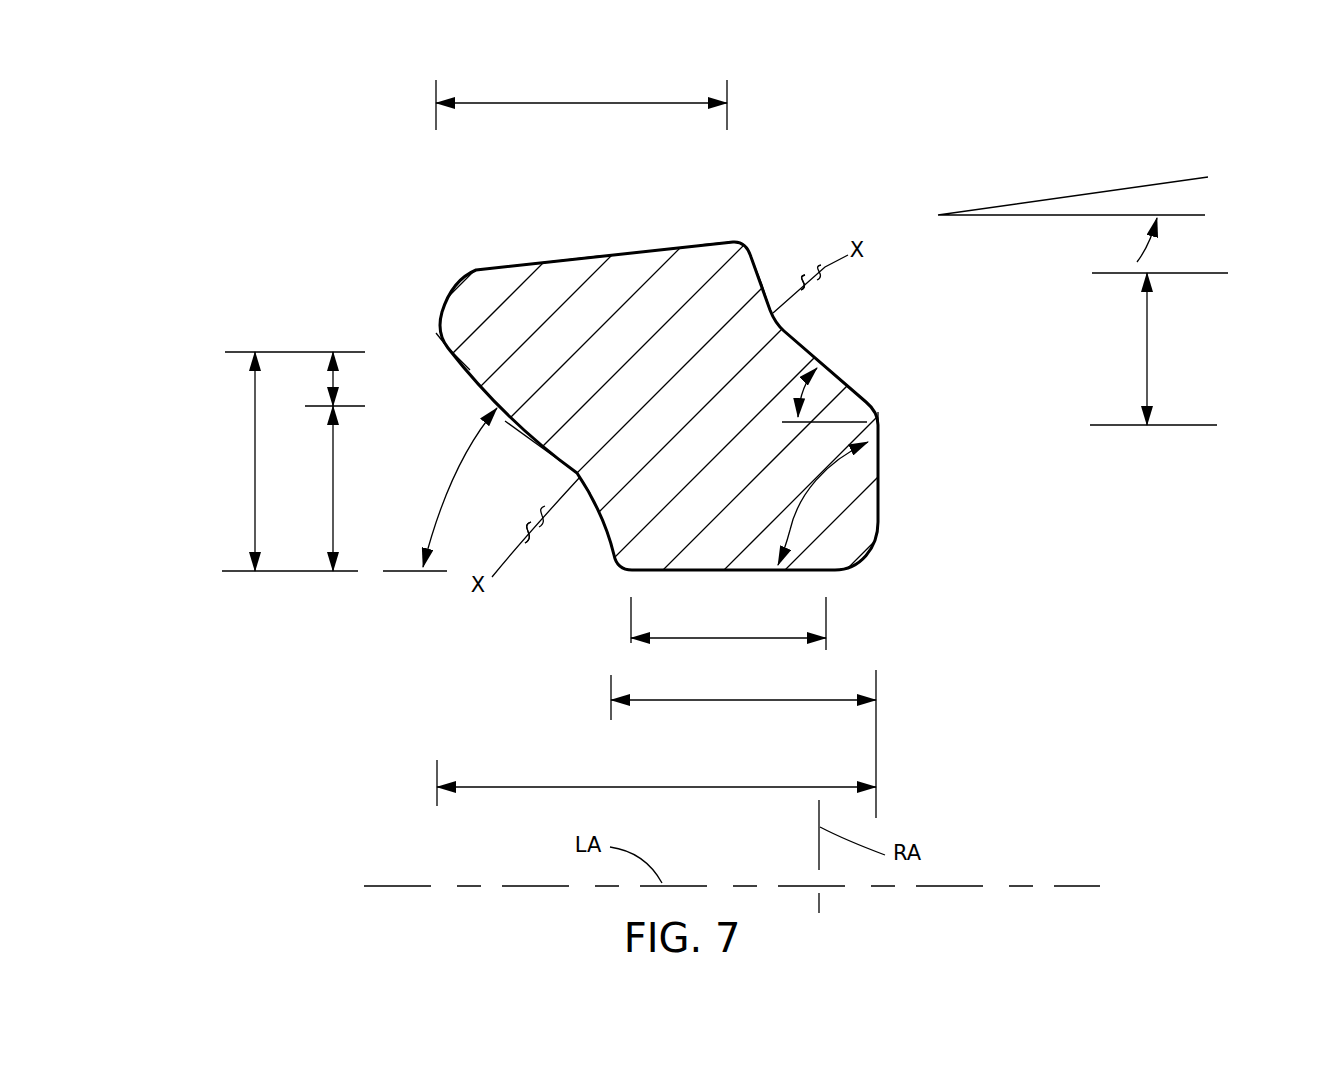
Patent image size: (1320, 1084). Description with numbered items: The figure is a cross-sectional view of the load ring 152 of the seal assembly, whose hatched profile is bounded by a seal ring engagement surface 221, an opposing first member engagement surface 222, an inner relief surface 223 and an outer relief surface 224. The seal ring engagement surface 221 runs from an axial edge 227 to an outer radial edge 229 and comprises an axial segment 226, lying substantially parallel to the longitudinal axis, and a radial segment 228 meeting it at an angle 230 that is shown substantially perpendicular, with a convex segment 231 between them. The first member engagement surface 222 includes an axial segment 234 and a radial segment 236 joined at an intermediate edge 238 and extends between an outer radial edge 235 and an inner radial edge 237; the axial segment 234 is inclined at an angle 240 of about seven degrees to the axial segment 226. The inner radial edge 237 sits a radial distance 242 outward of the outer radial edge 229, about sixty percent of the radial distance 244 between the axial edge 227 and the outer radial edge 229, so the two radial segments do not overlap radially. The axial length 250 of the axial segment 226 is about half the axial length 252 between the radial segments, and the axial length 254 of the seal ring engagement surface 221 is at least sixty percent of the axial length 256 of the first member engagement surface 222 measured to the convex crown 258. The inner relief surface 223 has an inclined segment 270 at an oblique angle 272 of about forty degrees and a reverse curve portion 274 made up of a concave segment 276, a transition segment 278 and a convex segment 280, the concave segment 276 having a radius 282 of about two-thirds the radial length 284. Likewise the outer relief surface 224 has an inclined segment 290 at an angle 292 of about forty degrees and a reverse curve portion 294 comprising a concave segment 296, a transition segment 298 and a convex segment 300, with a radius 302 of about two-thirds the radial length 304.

The load ring 152 is at (327, 235).
The seal ring engagement surface 221 is at (880, 527).
The first member engagement surface 222 is at (517, 263).
The inner relief surface 223 is at (530, 438).
The outer relief surface 224 is at (843, 370).
The axial segment 226 is at (745, 573).
The axial edge 227 is at (628, 570).
The radial segment 228 is at (879, 457).
The outer radial edge 229 is at (882, 414).
The angle 230 is at (802, 500).
The convex segment 231 is at (858, 560).
The axial segment 234 is at (568, 257).
The outer radial edge 235 is at (717, 233).
The radial segment 236 is at (438, 315).
The inner radial edge 237 is at (445, 350).
The intermediate edge 238 is at (473, 270).
The angle 240 is at (1157, 178).
The radial distance 242 is at (301, 379).
The radial distance 244 is at (305, 488).
The axial length 250 is at (728, 630).
The axial length 252 is at (656, 785).
The axial length 254 is at (743, 744).
The axial length 256 is at (581, 105).
The convex crown 258 is at (438, 337).
The inclined segment 270 is at (466, 366).
The oblique angle 272 is at (450, 482).
The reverse curve portion 274 is at (610, 533).
The concave segment 276 is at (577, 473).
The transition segment 278 is at (608, 558).
The convex segment 280 is at (616, 567).
The radius 282 is at (519, 540).
The radial length 284 is at (277, 461).
The inclined segment 290 is at (872, 403).
The oblique angle 292 is at (803, 385).
The reverse curve portion 294 is at (777, 287).
The concave segment 296 is at (783, 320).
The transition segment 298 is at (763, 273).
The convex segment 300 is at (745, 240).
The radius 302 is at (828, 266).
The radial length 304 is at (1159, 349).